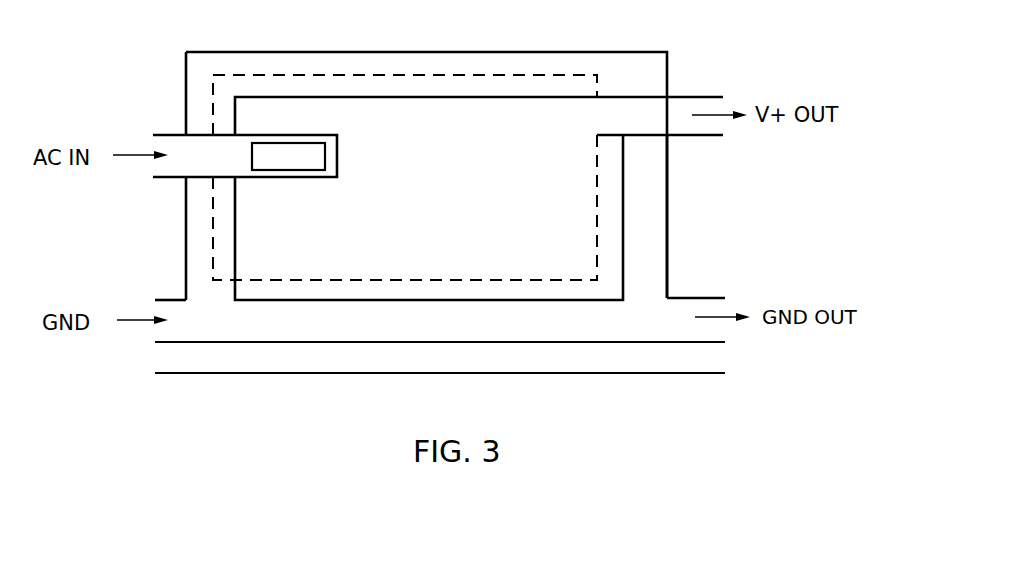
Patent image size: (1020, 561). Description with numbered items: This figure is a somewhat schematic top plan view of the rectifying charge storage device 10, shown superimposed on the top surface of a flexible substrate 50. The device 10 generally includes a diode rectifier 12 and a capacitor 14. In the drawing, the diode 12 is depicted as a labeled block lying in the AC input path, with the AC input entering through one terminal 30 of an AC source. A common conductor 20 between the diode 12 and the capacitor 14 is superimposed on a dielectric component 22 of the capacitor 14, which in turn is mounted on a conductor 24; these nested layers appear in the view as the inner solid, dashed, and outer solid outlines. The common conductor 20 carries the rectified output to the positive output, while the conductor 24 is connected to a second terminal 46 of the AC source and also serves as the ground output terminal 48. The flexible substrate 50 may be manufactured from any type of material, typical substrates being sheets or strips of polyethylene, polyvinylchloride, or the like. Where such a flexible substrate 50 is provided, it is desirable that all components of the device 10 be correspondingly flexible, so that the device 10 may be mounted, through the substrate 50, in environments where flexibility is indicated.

The rectifying charge storage device 10 is at (171, 210).
The diode rectifier 12 is at (327, 153).
The capacitor 14 is at (647, 263).
The common conductor 20 is at (468, 222).
The dielectric component 22 is at (404, 58).
The conductor 24 is at (655, 184).
The terminal 30 is at (226, 146).
The second terminal 46 is at (145, 296).
The ground output terminal 48 is at (718, 325).
The flexible substrate 50 is at (222, 362).